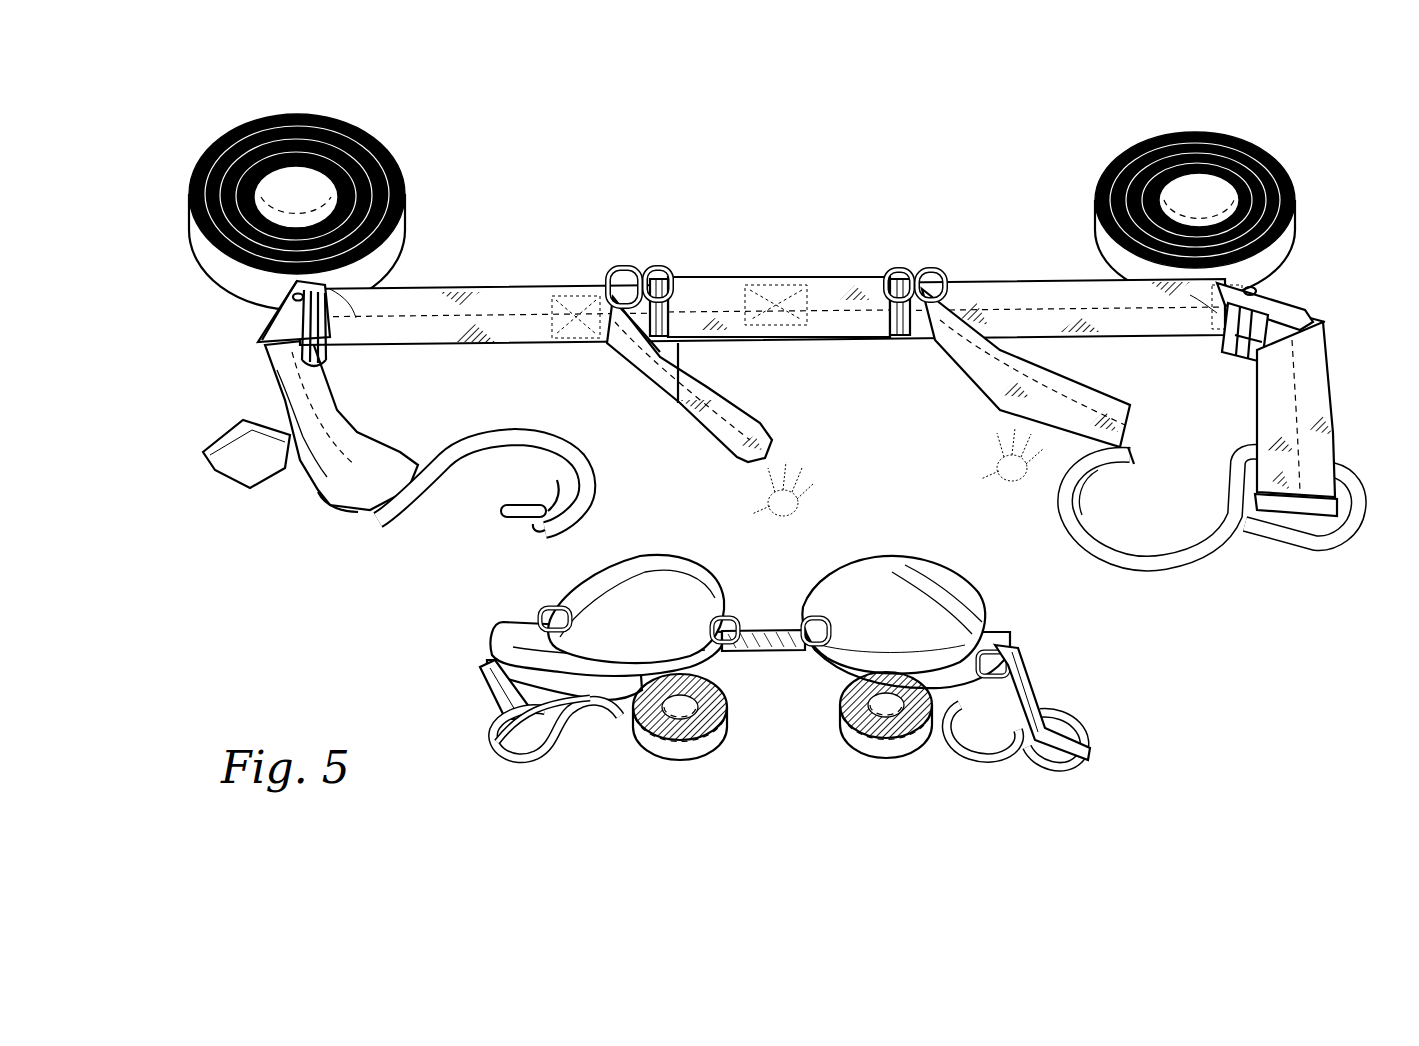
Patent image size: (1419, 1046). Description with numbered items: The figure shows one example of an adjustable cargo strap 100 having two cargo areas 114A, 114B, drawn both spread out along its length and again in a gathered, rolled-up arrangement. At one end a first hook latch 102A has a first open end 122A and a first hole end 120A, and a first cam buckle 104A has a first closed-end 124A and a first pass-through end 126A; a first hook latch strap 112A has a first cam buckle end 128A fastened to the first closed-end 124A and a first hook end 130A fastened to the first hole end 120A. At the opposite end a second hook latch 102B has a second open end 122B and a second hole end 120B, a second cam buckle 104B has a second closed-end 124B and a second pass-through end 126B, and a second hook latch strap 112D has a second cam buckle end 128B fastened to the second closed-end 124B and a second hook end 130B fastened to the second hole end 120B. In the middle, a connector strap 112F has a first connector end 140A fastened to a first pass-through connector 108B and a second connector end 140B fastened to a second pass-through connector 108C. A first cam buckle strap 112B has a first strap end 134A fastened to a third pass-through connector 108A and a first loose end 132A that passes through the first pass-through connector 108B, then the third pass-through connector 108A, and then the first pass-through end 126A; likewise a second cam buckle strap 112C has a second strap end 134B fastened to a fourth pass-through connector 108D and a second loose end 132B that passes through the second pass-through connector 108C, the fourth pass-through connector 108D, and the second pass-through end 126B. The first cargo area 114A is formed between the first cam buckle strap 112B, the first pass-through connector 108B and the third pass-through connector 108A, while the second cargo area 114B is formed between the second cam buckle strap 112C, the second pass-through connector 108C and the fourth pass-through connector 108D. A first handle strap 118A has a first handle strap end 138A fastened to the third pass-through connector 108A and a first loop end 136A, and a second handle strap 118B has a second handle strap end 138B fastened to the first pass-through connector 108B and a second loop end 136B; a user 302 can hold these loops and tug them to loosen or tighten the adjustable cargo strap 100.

The adjustable cargo strap 100 is at (928, 132).
The first hook latch 102A is at (372, 520).
The second hook latch 102B is at (1267, 517).
The first cam buckle 104A is at (263, 343).
The second cam buckle 104B is at (1277, 307).
The third pass-through connector 108A is at (615, 287).
The first pass-through connector 108B is at (650, 277).
The second pass-through connector 108C is at (880, 277).
The fourth pass-through connector 108D is at (927, 277).
The first hook latch strap 112A is at (270, 477).
The first cam buckle strap 112B is at (369, 185).
The second cam buckle strap 112C is at (1250, 210).
The second hook latch strap 112D is at (1310, 433).
The connector strap 112F is at (833, 313).
The first cargo area 114A is at (605, 627).
The second cargo area 114B is at (906, 622).
The first handle strap 118A is at (697, 410).
The second handle strap 118B is at (947, 347).
The first hole end 120A is at (348, 517).
The second hole end 120B is at (1317, 507).
The first open end 122A is at (521, 513).
The second open end 122B is at (1133, 500).
The first closed-end 124A is at (277, 368).
The second closed-end 124B is at (1320, 317).
The first pass-through end 126A is at (310, 330).
The second pass-through end 126B is at (1240, 340).
The first cam buckle end 128A is at (273, 403).
The second cam buckle end 128B is at (1305, 353).
The first hook end 130A is at (343, 480).
The second hook end 130B is at (1320, 490).
The first loose end 132A is at (332, 290).
The second loose end 132B is at (1217, 313).
The first strap end 134A is at (570, 297).
The second strap end 134B is at (970, 293).
The first loop end 136A is at (730, 407).
The second loop end 136B is at (1090, 420).
The first handle strap end 138A is at (617, 343).
The second handle strap end 138B is at (937, 310).
The first connector end 140A is at (687, 277).
The second connector end 140B is at (847, 273).
The user 302 is at (775, 494).